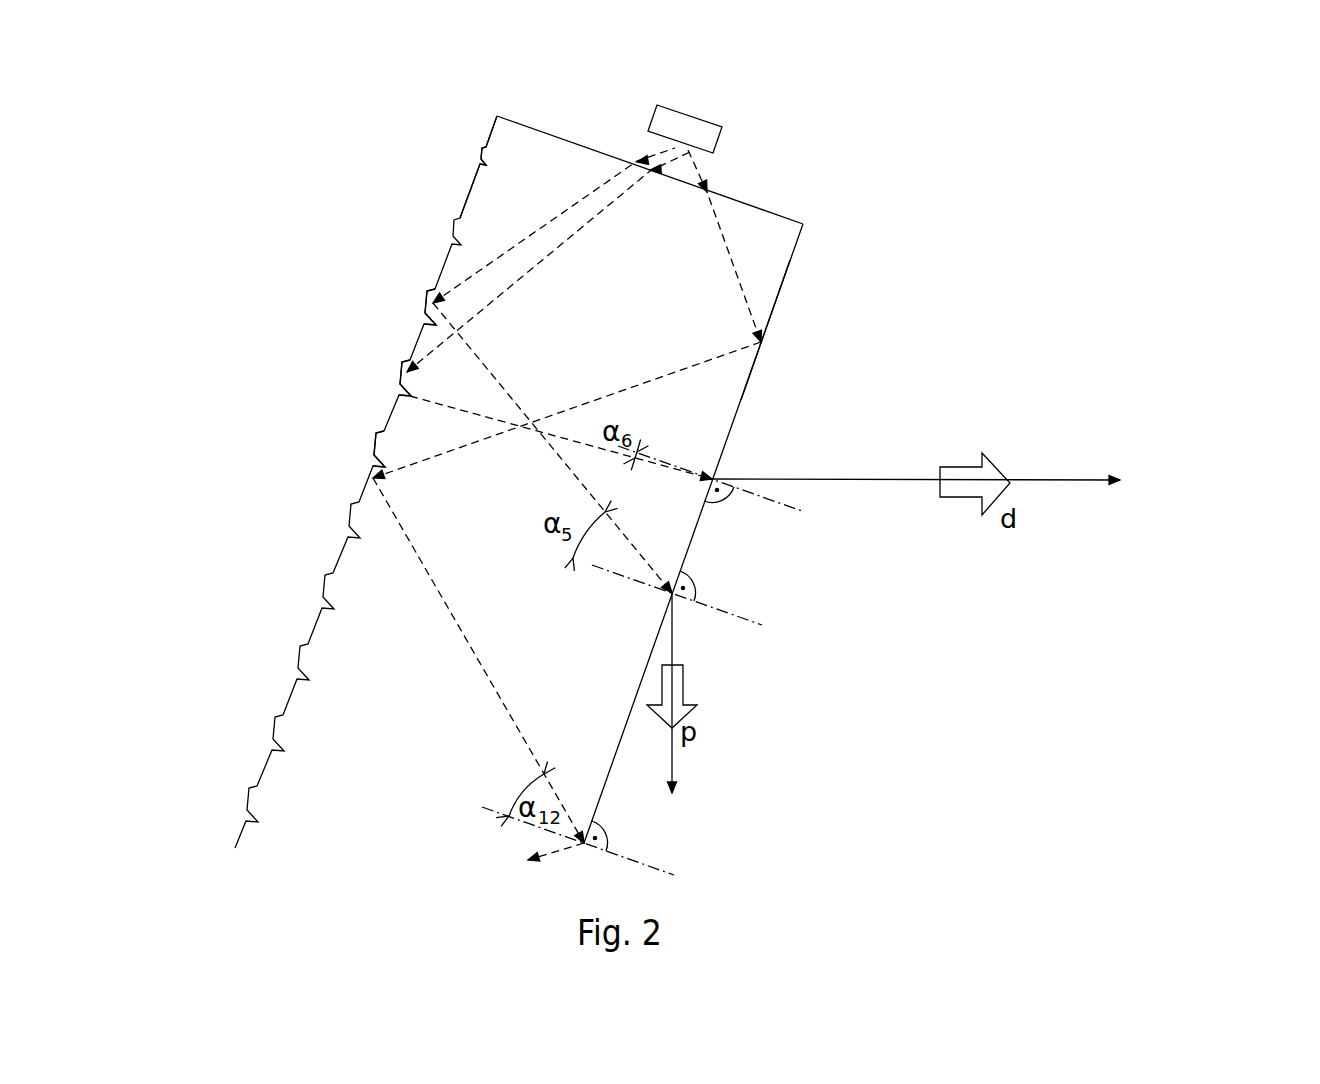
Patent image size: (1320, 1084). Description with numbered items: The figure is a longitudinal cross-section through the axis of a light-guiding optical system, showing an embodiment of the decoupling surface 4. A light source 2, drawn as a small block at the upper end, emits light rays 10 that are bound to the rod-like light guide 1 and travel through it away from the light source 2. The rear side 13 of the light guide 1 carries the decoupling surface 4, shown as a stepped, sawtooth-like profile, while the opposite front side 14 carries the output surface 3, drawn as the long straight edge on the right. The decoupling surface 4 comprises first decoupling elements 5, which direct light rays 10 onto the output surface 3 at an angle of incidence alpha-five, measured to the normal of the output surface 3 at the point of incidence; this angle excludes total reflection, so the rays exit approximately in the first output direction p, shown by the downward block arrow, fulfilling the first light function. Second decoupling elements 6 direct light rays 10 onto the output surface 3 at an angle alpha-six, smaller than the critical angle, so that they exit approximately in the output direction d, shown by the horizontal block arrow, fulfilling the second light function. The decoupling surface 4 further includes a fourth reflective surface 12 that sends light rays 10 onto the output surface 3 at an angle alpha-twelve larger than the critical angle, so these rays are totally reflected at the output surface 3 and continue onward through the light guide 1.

The light guide 1 is at (544, 132).
The light source 2 is at (693, 117).
The output surface 3 is at (703, 515).
The decoupling surface 4 is at (467, 200).
The first decoupling elements 5 is at (430, 303).
The second decoupling elements 6 is at (410, 392).
The light rays 10 is at (662, 155).
The fourth reflective surface 12 is at (373, 478).
The rear side 13 is at (300, 582).
The front side 14 is at (758, 392).